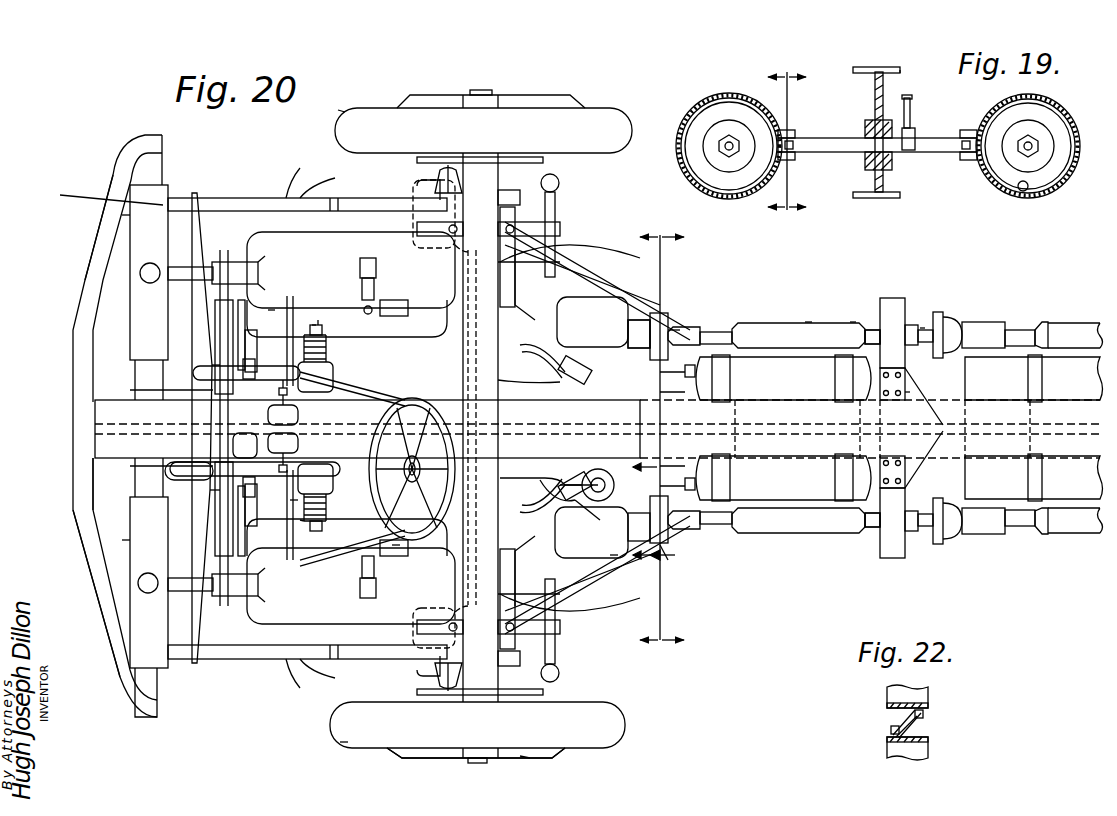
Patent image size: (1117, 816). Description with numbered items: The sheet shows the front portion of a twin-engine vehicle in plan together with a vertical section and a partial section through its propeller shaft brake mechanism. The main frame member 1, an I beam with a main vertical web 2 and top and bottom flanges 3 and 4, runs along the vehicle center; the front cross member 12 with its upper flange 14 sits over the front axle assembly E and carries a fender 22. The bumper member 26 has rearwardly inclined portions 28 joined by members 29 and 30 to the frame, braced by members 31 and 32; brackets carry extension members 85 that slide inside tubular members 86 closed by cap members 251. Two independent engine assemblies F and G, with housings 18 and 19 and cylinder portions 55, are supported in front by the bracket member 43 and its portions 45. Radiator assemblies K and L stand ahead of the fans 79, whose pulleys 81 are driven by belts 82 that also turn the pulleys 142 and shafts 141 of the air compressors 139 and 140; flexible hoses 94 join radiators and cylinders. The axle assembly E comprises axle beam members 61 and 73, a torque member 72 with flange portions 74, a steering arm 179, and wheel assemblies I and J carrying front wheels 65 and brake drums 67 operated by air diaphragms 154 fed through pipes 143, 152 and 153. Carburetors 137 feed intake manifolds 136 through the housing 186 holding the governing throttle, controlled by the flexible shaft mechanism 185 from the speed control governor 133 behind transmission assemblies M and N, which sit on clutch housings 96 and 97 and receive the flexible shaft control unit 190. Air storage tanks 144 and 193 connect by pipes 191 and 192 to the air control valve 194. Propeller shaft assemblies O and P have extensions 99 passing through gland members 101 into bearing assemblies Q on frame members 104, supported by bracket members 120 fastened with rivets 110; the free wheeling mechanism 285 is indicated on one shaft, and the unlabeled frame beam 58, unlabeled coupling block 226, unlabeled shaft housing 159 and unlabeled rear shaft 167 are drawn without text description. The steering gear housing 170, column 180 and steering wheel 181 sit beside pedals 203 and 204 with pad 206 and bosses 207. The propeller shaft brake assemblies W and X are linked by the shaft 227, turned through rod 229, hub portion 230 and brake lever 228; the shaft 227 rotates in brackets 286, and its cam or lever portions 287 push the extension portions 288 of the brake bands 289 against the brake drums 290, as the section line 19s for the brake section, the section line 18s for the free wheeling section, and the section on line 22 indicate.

In FIG. 20, the member 30 is at (162, 135).
In FIG. 20, the rearwardly inclined portions 28 is at (95, 258).
In FIG. 20, the radiator assembly L is at (130, 235).
In FIG. 20, the member 32 is at (60, 195).
In FIG. 20, the member 31 is at (130, 640).
In FIG. 20, the bumper member 26 is at (75, 490).
In FIG. 20, the radiator assembly K is at (130, 552).
In FIG. 20, the member 29 is at (160, 700).
In FIG. 20, the fans 79 is at (130, 300).
In FIG. 20, the belts 82 is at (215, 318).
In FIG. 20, the bracket member 43 is at (150, 444).
In FIG. 20, the central frame beam 58 is at (80, 442).
In FIG. 20, the extension members 85 is at (204, 193).
In FIG. 20, the engine assembly F is at (240, 245).
In FIG. 20, the engine assembly G is at (243, 615).
In FIG. 20, the flexible hoses 94 is at (215, 292).
In FIG. 20, the pulleys 142 is at (215, 375).
In FIG. 20, the pulleys 81 is at (232, 260).
In FIG. 20, the cylinder portions 55 is at (295, 198).
In FIG. 20, the tubular members 86 is at (335, 175).
In FIG. 20, the cap members 251 is at (300, 170).
In FIG. 20, the housing 18 is at (355, 530).
In FIG. 20, the portions 45 is at (190, 372).
In FIG. 20, the housing 170 is at (165, 470).
In FIG. 20, the pedal or lever member 204 is at (315, 428).
In FIG. 20, the shafts 141 is at (284, 368).
In FIG. 20, the pipes or tubing 143 is at (318, 320).
In FIG. 20, the air compressor 139 is at (312, 325).
In FIG. 20, the column 180 is at (290, 500).
In FIG. 20, the air compressor 140 is at (300, 520).
In FIG. 20, the pad 206 is at (268, 412).
In FIG. 20, the bosses or hubs 207 is at (262, 418).
In FIG. 20, the coupling block 226 is at (233, 440).
In FIG. 20, the pedal or lever member 203 is at (268, 428).
In FIG. 20, the housing 19 is at (268, 310).
In FIG. 20, the housing 186 is at (372, 300).
In FIG. 20, the intake manifolds 136 is at (368, 320).
In FIG. 20, the carburetors 137 is at (395, 325).
In FIG. 20, the flexible shaft mechanism 185 is at (408, 330).
In FIG. 20, the steering wheel 181 is at (392, 545).
In FIG. 20, the pipes or tubings 153 is at (412, 610).
In FIG. 20, the brake lever 228 is at (405, 400).
In FIG. 20, the upper flange 14 is at (498, 722).
In FIG. 20, the front wheels 65 is at (625, 110).
In FIG. 20, the wheel assembly I is at (338, 110).
In FIG. 20, the wheel assembly J is at (340, 742).
In FIG. 20, the front axle assembly E is at (520, 756).
In FIG. 20, the front cross member 12 is at (460, 752).
In FIG. 20, the brake drums 67 is at (545, 160).
In FIG. 20, the air diaphragms 154 is at (435, 178).
In FIG. 20, the axle beam member 61 is at (435, 200).
In FIG. 20, the flange portions 74 is at (515, 240).
In FIG. 20, the axle beam member 73 is at (520, 262).
In FIG. 20, the pipes or tubings 152 is at (540, 258).
In FIG. 20, the clutch housing 96 is at (555, 255).
In FIG. 20, the clutch housing 97 is at (540, 545).
In FIG. 20, the steering arm 179 is at (560, 594).
In FIG. 20, the transmission assembly N is at (610, 555).
In FIG. 20, the transmission assembly M is at (595, 297).
In FIG. 20, the torque member 72 is at (640, 320).
In FIG. 20, the pipe 191 is at (598, 500).
In FIG. 20, the air control valve 194 is at (579, 514).
In FIG. 20, the flexible shaft control unit 190 is at (520, 345).
In FIG. 20, the rod 229 is at (505, 380).
In FIG. 20, the section line 19 19s is at (662, 437).
In FIG. 20, the speed control governor 133 is at (660, 313).
In FIG. 20, the propeller shaft brake assembly W is at (680, 320).
In FIG. 19, the propeller shaft brake assembly W is at (1062, 110).
In FIG. 20, the shaft 227 is at (672, 345).
In FIG. 19, the shaft 227 is at (825, 140).
In FIG. 22, the shaft 227 is at (908, 727).
In FIG. 20, the propeller shaft assembly P is at (760, 527).
In FIG. 20, the shaft housing 159 is at (832, 322).
In FIG. 20, the propeller shaft assembly O is at (805, 322).
In FIG. 20, the extensions 99 is at (870, 328).
In FIG. 20, the air storage tank 144 is at (862, 292).
In FIG. 20, the frame member 104 is at (892, 298).
In FIG. 20, the gland member 101 is at (936, 330).
In FIG. 20, the bearing assembly Q is at (920, 328).
In FIG. 20, the rear shaft 167 is at (1040, 322).
In FIG. 20, the hub portion 230 is at (700, 375).
In FIG. 19, the hub portion 230 is at (912, 110).
In FIG. 20, the pipe 192 is at (700, 458).
In FIG. 20, the air storage tank 193 is at (860, 525).
In FIG. 20, the rivets 110 is at (905, 375).
In FIG. 20, the bracket members 120 is at (910, 392).
In FIG. 20, the propeller shaft brake assembly X is at (668, 555).
In FIG. 19, the propeller shaft brake assembly X is at (693, 95).
In FIG. 20, the free wheeling mechanism 285 is at (665, 560).
In FIG. 20, the section line 18 18s is at (643, 503).
In FIG. 19, the brake bands 289 is at (735, 105).
In FIG. 22, the brake bands 289 is at (928, 690).
In FIG. 19, the brake drums 290 is at (760, 130).
In FIG. 19, the extension portions 288 is at (790, 131).
In FIG. 22, the extension portions 288 is at (920, 708).
In FIG. 19, the cam or lever portions 287 is at (790, 149).
In FIG. 22, the cam or lever portions 287 is at (923, 713).
In FIG. 19, the main vertical web 2 is at (883, 100).
In FIG. 19, the flange 3 is at (888, 67).
In FIG. 19, the flange 4 is at (890, 198).
In FIG. 19, the main frame member 1 is at (900, 70).
In FIG. 19, the brackets 286 is at (868, 165).
In FIG. 19, the fender 22 is at (787, 139).